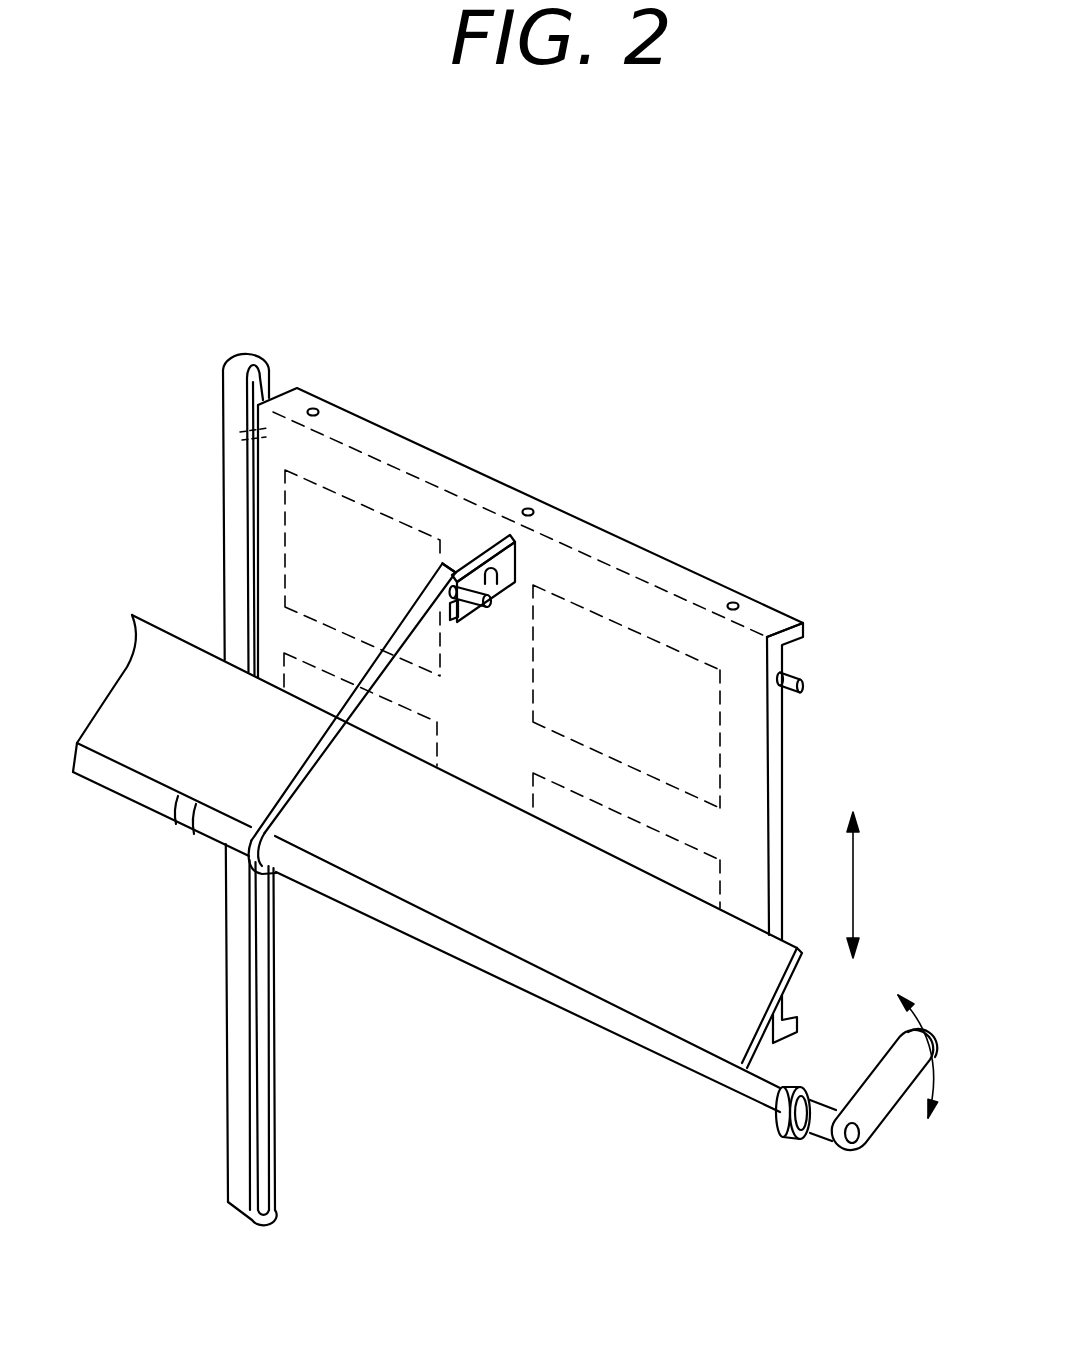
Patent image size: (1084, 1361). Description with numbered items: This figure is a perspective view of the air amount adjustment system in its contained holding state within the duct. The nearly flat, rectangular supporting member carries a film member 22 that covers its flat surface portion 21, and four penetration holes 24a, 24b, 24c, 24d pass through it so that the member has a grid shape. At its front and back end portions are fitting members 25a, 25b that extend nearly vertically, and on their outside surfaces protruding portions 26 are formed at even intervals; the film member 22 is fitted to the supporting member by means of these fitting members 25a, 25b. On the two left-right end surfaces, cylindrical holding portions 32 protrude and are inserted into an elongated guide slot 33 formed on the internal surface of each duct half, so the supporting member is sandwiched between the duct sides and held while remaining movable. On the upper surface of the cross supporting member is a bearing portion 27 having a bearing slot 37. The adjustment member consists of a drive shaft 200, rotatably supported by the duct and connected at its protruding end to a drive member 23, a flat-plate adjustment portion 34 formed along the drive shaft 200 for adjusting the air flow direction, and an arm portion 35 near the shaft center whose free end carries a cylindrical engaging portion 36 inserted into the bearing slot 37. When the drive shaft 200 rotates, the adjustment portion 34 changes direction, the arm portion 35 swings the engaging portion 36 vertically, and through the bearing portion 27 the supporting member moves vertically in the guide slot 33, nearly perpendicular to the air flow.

The flat surface portion 21 is at (784, 770).
The film member 22 is at (643, 677).
The drive member 23 is at (877, 1108).
The penetration hole 24a is at (307, 685).
The penetration hole 24b is at (718, 565).
The penetration hole 24c is at (363, 530).
The penetration hole 24d is at (703, 870).
The fitting member 25a is at (803, 1020).
The fitting member 25b is at (802, 628).
The protruding portion 26 is at (316, 409).
The bearing portion 27 is at (477, 548).
The holding portion 32 is at (802, 675).
The guide slot 33 is at (249, 358).
The adjustment portion 34 is at (532, 917).
The arm portion 35 is at (420, 655).
The engaging portion 36 is at (514, 560).
The bearing slot 37 is at (521, 593).
The drive shaft 200 is at (755, 1092).